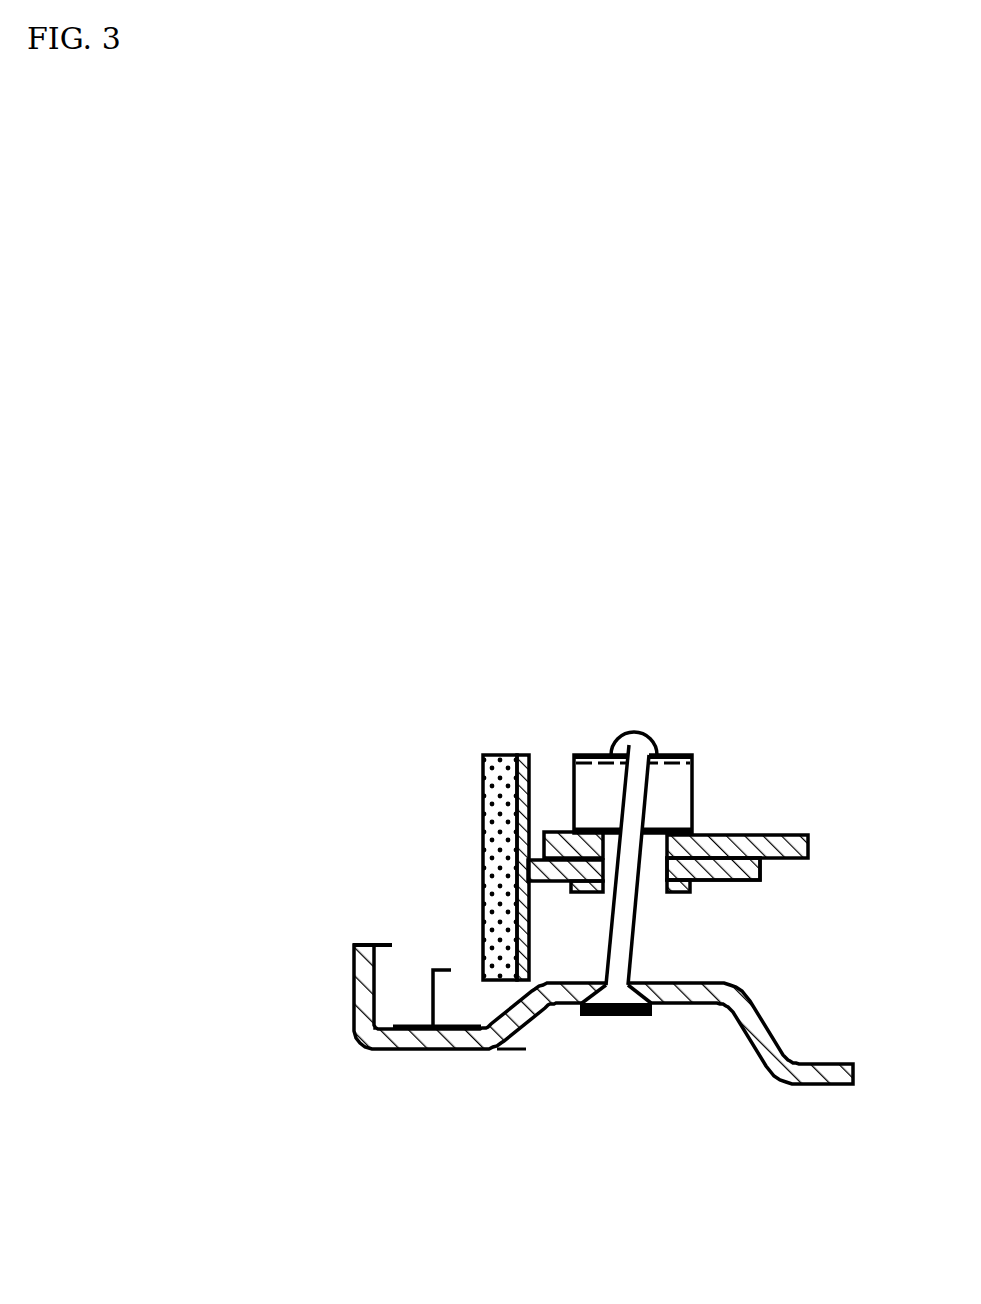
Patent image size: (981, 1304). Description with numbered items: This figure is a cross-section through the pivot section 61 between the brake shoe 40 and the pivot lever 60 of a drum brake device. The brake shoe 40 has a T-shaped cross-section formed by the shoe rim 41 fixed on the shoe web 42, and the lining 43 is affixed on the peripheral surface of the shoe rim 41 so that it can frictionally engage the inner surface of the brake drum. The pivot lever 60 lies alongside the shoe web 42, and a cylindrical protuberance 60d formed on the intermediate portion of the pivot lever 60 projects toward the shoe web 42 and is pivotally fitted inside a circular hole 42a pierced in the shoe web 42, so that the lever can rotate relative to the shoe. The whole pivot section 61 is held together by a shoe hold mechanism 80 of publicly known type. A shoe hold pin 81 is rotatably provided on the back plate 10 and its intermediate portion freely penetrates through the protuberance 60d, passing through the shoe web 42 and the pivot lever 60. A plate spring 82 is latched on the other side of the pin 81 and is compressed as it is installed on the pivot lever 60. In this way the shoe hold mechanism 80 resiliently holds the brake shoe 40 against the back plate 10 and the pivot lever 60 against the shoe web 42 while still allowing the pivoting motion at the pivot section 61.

The back plate 10 is at (779, 1088).
The brake shoe 40 is at (482, 746).
The shoe rim 41 is at (520, 748).
The lining 43 is at (493, 845).
The pivot lever 60 is at (790, 833).
The cylindrical protuberance 60d is at (588, 894).
The shoe web 42 is at (740, 870).
The circular hole 42a is at (683, 888).
The pivot section 61 is at (710, 898).
The shoe hold mechanism 80 is at (670, 737).
The shoe hold pin 81 is at (632, 773).
The plate spring 82 is at (683, 757).